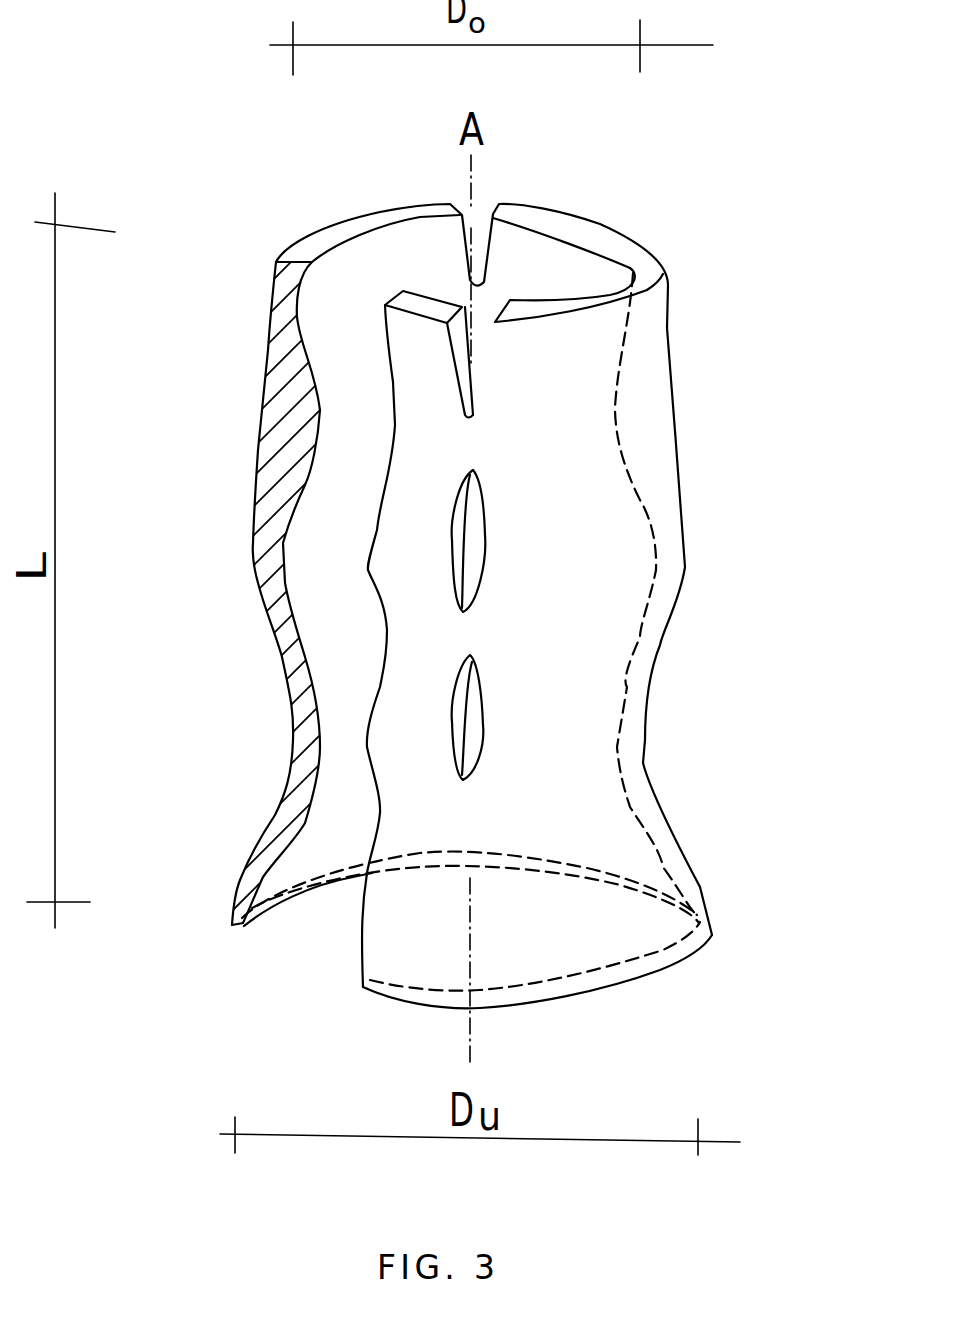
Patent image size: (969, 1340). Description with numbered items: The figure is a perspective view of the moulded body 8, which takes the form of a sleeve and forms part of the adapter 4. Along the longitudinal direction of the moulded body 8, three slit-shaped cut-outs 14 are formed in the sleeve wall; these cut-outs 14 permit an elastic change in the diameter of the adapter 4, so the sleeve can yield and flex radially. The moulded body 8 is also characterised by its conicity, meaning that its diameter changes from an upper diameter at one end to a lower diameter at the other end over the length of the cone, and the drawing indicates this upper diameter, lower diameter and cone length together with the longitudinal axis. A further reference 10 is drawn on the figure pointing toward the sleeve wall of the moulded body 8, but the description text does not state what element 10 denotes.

The adapter 4 is at (701, 278).
The moulded body 8 is at (262, 506).
The inner surface of sleeve 10 is at (319, 420).
The slit-shaped cut-outs 14 is at (485, 333).